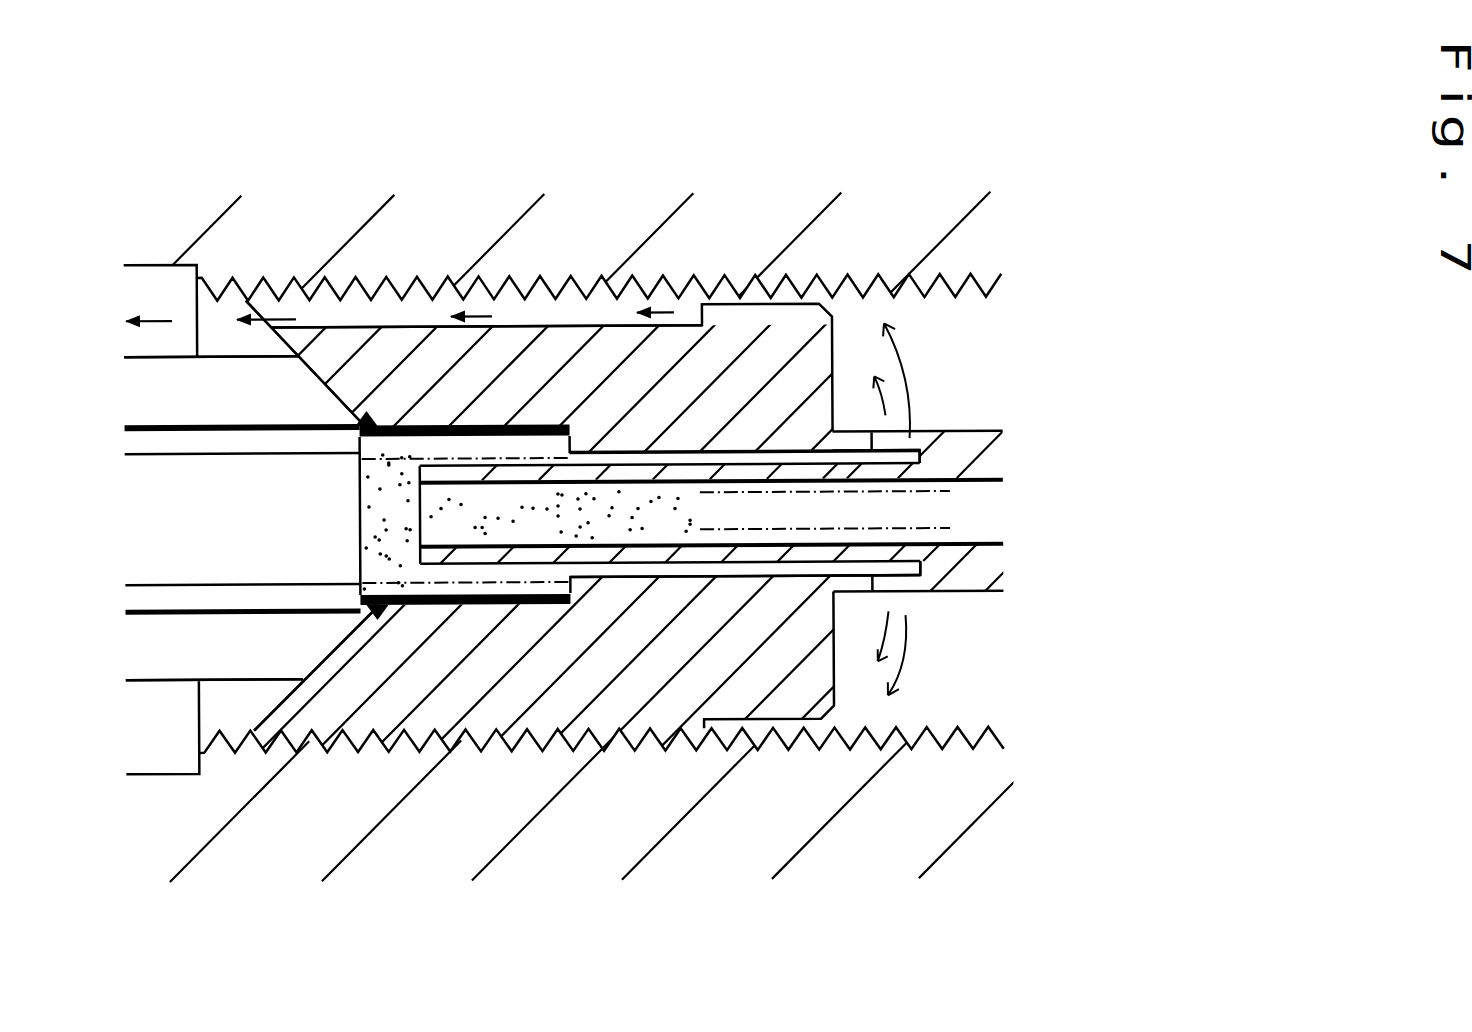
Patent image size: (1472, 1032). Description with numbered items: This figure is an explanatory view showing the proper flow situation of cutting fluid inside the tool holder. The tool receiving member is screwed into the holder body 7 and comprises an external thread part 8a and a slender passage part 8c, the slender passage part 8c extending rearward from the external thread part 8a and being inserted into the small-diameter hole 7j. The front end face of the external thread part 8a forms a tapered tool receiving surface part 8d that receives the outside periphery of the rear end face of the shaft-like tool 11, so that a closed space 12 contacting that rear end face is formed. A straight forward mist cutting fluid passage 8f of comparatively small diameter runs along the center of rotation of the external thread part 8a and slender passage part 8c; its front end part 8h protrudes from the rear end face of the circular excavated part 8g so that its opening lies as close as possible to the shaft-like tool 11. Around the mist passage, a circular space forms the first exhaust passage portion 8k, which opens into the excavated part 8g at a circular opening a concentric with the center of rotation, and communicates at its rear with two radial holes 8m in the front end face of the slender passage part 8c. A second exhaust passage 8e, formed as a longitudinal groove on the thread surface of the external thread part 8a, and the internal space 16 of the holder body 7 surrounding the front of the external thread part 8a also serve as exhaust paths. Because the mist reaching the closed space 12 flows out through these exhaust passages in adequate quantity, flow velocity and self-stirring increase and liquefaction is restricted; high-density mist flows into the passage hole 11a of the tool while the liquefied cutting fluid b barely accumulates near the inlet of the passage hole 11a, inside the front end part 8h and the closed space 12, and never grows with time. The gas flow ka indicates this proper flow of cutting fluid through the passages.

The holder body 7 is at (942, 822).
The small-diameter hole 7j is at (957, 298).
The external thread part 8a is at (712, 667).
The slender passage part 8c is at (975, 450).
The tapered tool receiving surface part 8d is at (340, 387).
The second exhaust passage 8e is at (395, 310).
The forward mist cutting fluid passage 8f is at (690, 500).
The excavated part 8g is at (497, 590).
The front end part of the forward mist cutting fluid passage 8h is at (485, 472).
The first exhaust passage portion 8k is at (735, 460).
The radial holes 8m is at (910, 433).
The shaft-like tool 11 is at (167, 683).
The passage hole 11a is at (212, 455).
The closed space 12 is at (360, 537).
The internal space 16 is at (167, 276).
The opening a is at (568, 458).
The liquefied cutting fluid b is at (333, 443).
The gas flow ka is at (930, 500).